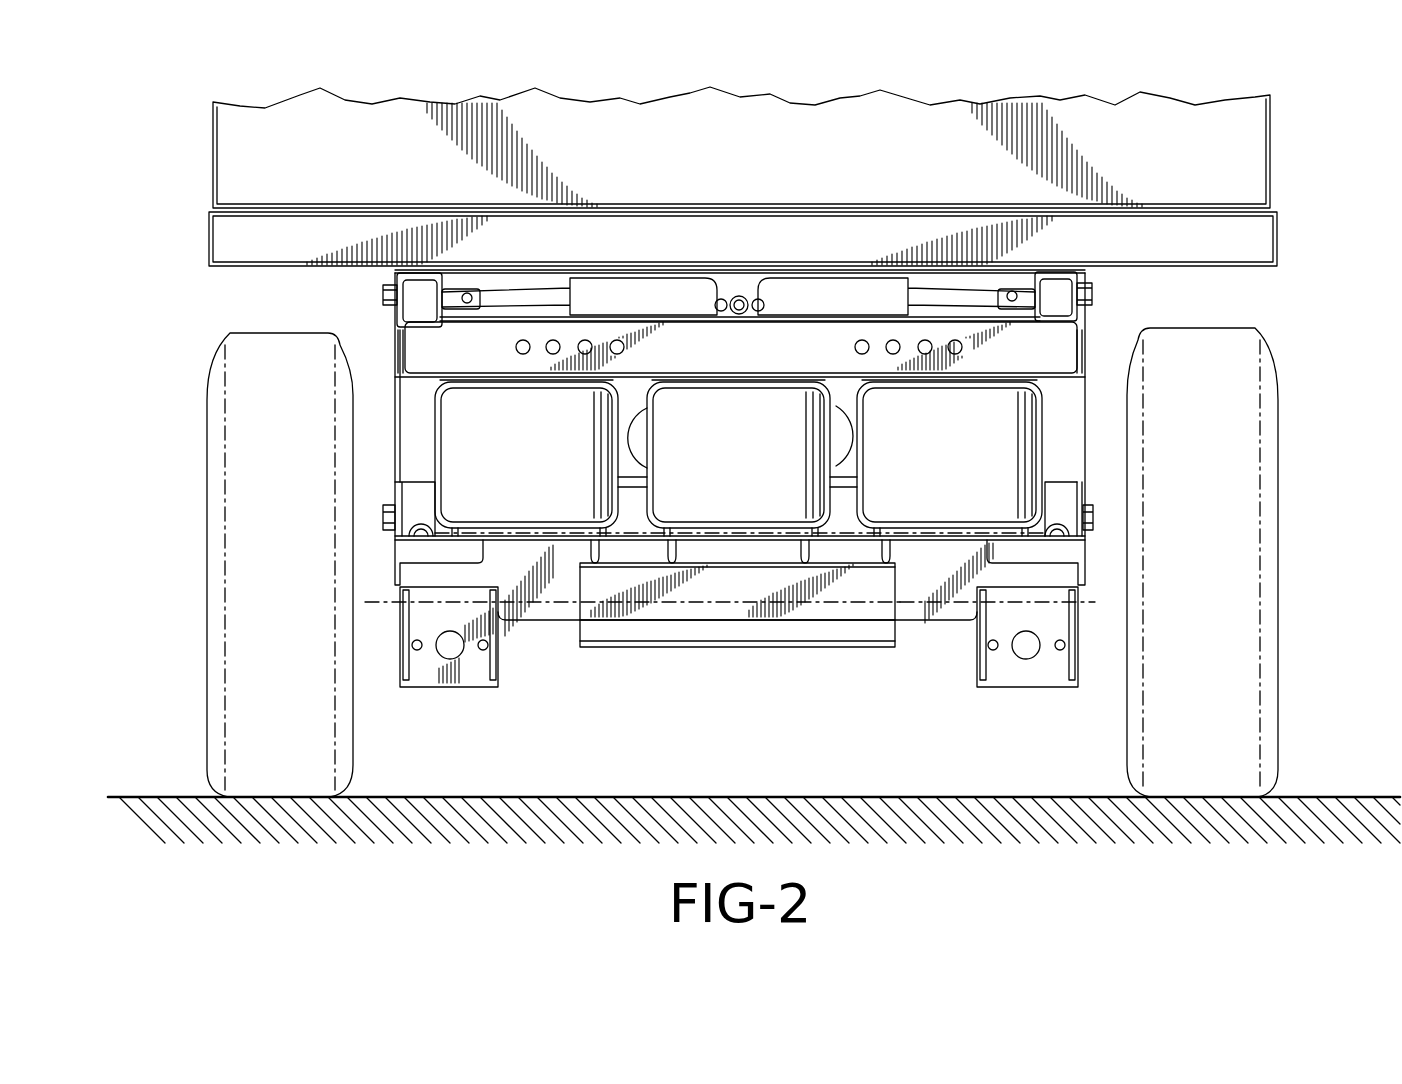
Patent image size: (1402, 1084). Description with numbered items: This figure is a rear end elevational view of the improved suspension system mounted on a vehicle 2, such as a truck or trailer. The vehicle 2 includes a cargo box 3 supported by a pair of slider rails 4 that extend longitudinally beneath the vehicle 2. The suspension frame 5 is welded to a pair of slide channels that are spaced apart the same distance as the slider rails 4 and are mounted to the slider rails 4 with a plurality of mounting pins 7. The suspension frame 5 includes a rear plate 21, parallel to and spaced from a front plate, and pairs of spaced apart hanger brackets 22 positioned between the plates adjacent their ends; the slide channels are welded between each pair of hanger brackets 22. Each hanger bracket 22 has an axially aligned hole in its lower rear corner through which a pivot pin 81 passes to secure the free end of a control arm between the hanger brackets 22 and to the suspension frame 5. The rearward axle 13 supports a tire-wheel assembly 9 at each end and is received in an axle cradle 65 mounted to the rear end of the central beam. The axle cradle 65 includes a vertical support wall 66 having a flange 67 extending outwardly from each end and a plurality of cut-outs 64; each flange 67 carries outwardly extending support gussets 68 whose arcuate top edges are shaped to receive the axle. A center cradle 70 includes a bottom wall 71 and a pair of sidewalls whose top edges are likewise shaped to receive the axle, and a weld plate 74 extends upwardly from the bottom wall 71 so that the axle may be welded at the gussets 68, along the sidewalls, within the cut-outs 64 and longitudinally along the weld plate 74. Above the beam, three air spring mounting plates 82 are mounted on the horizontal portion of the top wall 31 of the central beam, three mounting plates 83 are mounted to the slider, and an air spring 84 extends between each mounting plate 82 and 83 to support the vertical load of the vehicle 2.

The vehicle 2 is at (1258, 151).
The cargo box 3 is at (1252, 185).
The slider rails 4 is at (1090, 318).
The suspension frame 5 is at (396, 407).
The mounting pins 7 is at (383, 292).
The tire-wheel assembly 9 is at (207, 488).
The rearward axle 13 is at (910, 600).
The rear plate 21 is at (1068, 415).
The hanger brackets 22 is at (400, 367).
The top wall 31 is at (760, 545).
The cut-outs 64 is at (680, 548).
The axle cradle 65 is at (400, 640).
The vertical support wall 66 is at (535, 610).
The flange 67 is at (483, 675).
The support gussets 68 is at (410, 665).
The center cradle 70 is at (805, 610).
The bottom wall 71 is at (645, 648).
The weld plate 74 is at (712, 602).
The pivot pin 81 is at (385, 515).
The air spring mounting plates 82 is at (477, 530).
The mounting plates 83 is at (533, 378).
The air spring 84 is at (507, 461).